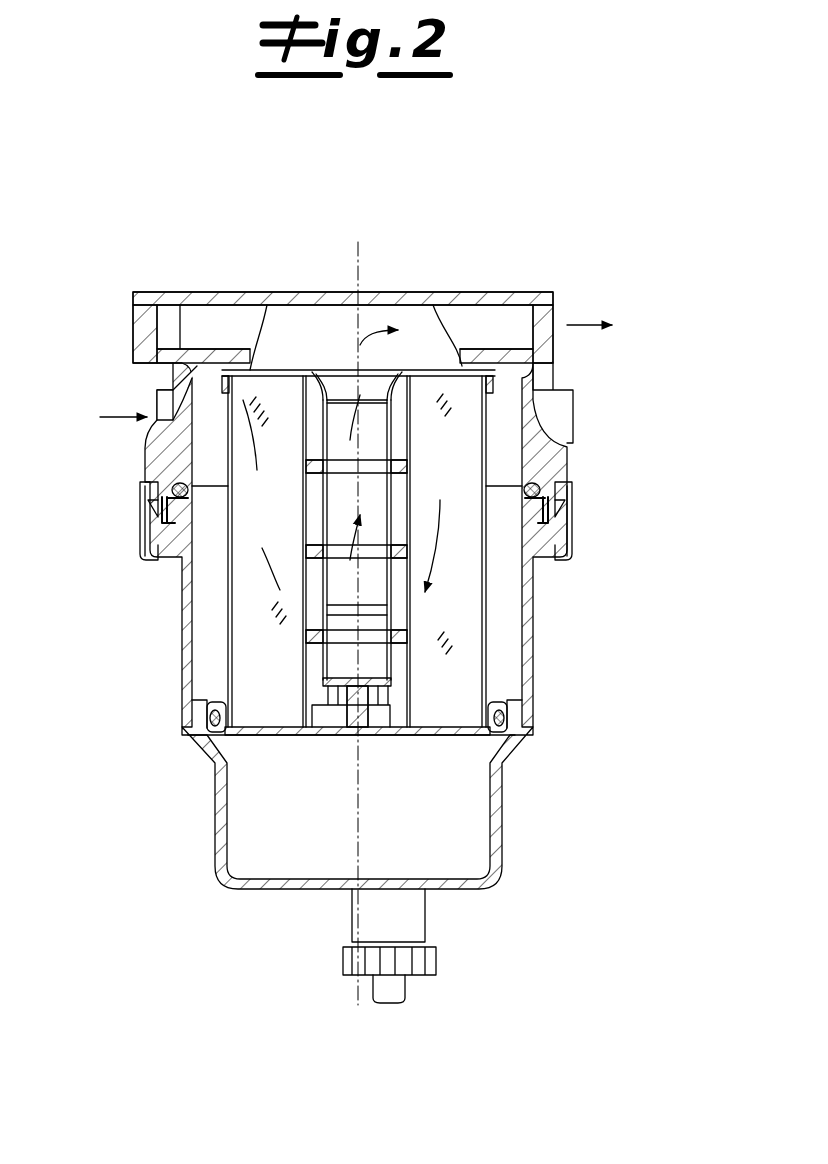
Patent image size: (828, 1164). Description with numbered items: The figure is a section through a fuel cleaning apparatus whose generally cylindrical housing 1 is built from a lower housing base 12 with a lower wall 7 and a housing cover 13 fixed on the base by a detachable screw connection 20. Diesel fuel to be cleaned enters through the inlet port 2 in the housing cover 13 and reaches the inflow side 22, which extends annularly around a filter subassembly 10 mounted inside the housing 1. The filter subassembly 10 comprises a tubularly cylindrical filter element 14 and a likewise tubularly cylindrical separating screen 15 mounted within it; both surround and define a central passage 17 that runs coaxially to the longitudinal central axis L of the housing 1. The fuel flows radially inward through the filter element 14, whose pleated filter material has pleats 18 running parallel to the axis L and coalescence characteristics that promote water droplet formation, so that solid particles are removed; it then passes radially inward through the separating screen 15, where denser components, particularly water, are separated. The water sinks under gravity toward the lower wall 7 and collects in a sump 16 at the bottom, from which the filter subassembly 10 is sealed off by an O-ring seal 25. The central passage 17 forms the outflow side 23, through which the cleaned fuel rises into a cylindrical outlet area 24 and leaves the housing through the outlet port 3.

The housing 1 is at (365, 678).
The inlet port 2 is at (147, 400).
The outlet port 3 is at (383, 280).
The lower wall 7 is at (298, 900).
The filter subassembly 10 is at (381, 557).
The housing base 12 is at (187, 637).
The housing cover 13 is at (143, 460).
The filter element 14 is at (490, 608).
The separating screen 15 is at (392, 565).
The sump 16 is at (500, 835).
The central passage 17 is at (340, 627).
The pleats 18 is at (500, 655).
The screw connection 20 is at (572, 505).
The inflow side 22 is at (203, 520).
The outflow side 23 is at (390, 480).
The cylindrical outlet area 24 is at (426, 300).
The seal 25 is at (212, 715).
The longitudinal central axis L is at (360, 822).